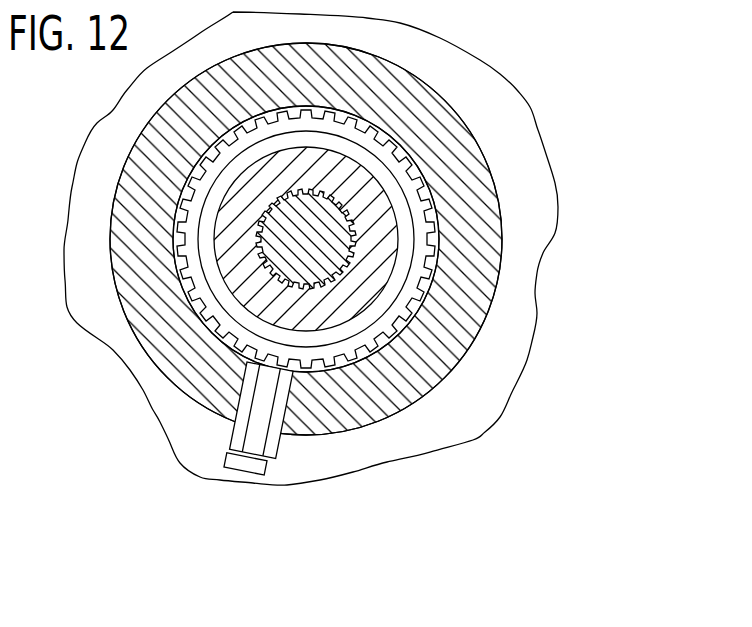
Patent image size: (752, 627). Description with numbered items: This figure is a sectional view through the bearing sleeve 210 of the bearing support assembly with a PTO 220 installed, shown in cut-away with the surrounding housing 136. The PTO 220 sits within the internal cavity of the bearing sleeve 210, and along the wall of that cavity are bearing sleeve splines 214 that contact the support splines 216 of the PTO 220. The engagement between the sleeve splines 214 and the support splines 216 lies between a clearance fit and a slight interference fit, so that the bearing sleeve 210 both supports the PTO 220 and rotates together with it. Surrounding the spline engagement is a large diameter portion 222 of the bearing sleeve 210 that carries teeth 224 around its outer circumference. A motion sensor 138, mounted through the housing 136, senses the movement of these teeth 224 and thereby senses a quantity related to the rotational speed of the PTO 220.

The housing 136 is at (128, 182).
The motion sensor 138 is at (230, 440).
The bearing sleeve 210 is at (342, 298).
The bearing sleeve splines 214 is at (346, 199).
The support splines 216 is at (346, 199).
The PTO 220 is at (307, 207).
The large diameter portion 222 is at (385, 295).
The teeth 224 is at (420, 280).